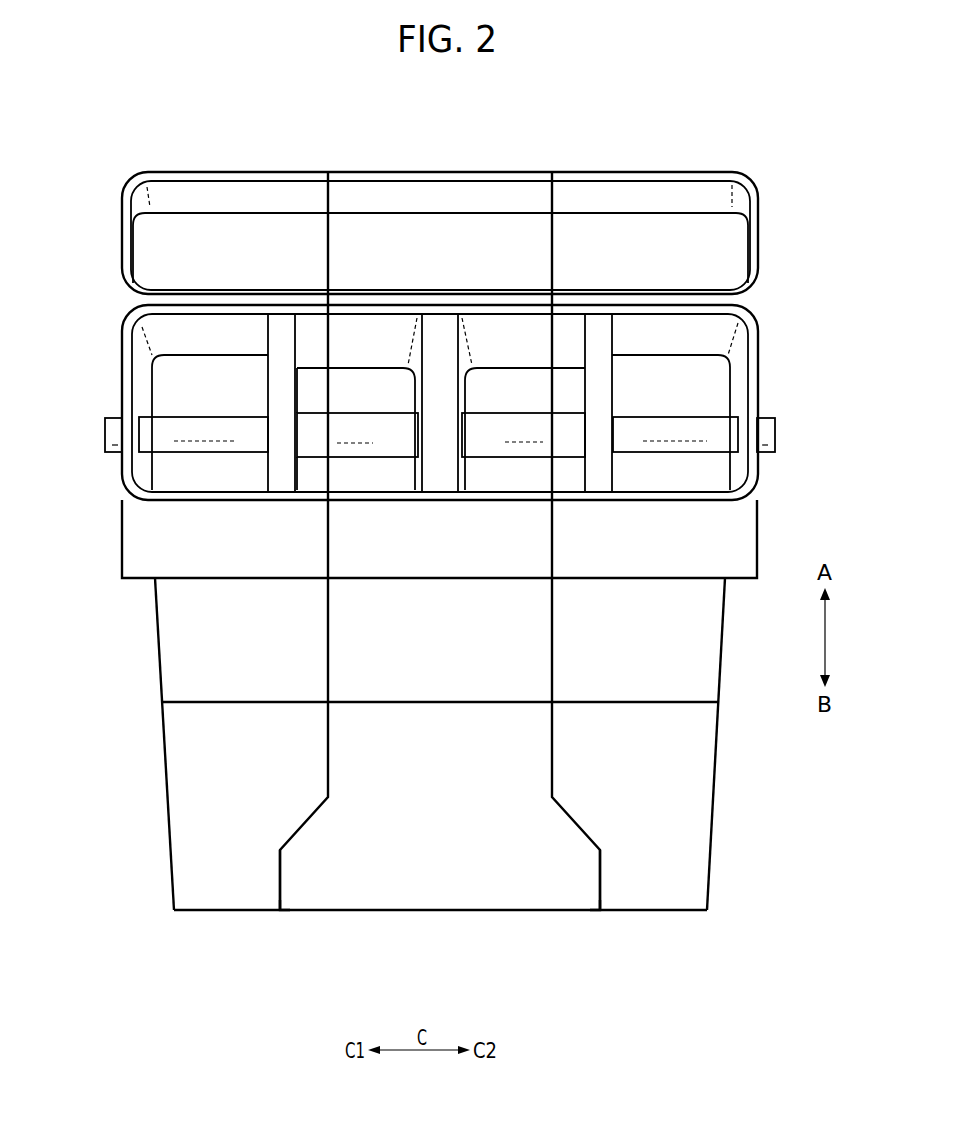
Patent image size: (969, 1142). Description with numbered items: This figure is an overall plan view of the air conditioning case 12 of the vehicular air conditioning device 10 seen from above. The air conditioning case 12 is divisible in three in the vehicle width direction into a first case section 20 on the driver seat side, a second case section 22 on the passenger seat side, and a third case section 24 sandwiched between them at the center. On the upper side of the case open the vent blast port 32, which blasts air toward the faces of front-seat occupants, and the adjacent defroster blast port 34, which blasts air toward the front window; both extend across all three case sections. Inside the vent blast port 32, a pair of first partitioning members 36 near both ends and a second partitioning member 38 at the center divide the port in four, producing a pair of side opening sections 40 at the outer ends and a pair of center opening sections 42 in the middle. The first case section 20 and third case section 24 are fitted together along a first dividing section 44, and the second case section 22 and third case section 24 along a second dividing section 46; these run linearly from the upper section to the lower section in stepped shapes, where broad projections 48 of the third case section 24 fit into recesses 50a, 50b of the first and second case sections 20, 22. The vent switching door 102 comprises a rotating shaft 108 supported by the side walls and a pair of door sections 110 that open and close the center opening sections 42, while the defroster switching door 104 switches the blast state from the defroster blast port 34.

The vehicular air conditioning device 10 is at (317, 104).
The air conditioning case 12 is at (563, 167).
The first case section 20 is at (160, 796).
The second case section 22 is at (726, 792).
The third case section 24 is at (432, 920).
The vent blast port 32 is at (743, 373).
The defroster blast port 34 is at (437, 195).
The first partitioning member 36 is at (278, 326).
The second partitioning member 38 is at (442, 478).
The side opening section 40 is at (167, 392).
The center opening section 42 is at (495, 333).
The first dividing section 44 is at (328, 637).
The second dividing section 46 is at (555, 637).
The projection 48 is at (290, 858).
The recess 50a is at (282, 880).
The recess 50b is at (598, 882).
The vent switching door 102 is at (508, 400).
The defroster switching door 104 is at (246, 233).
The rotating shaft 108 is at (665, 427).
The door section 110 is at (313, 390).